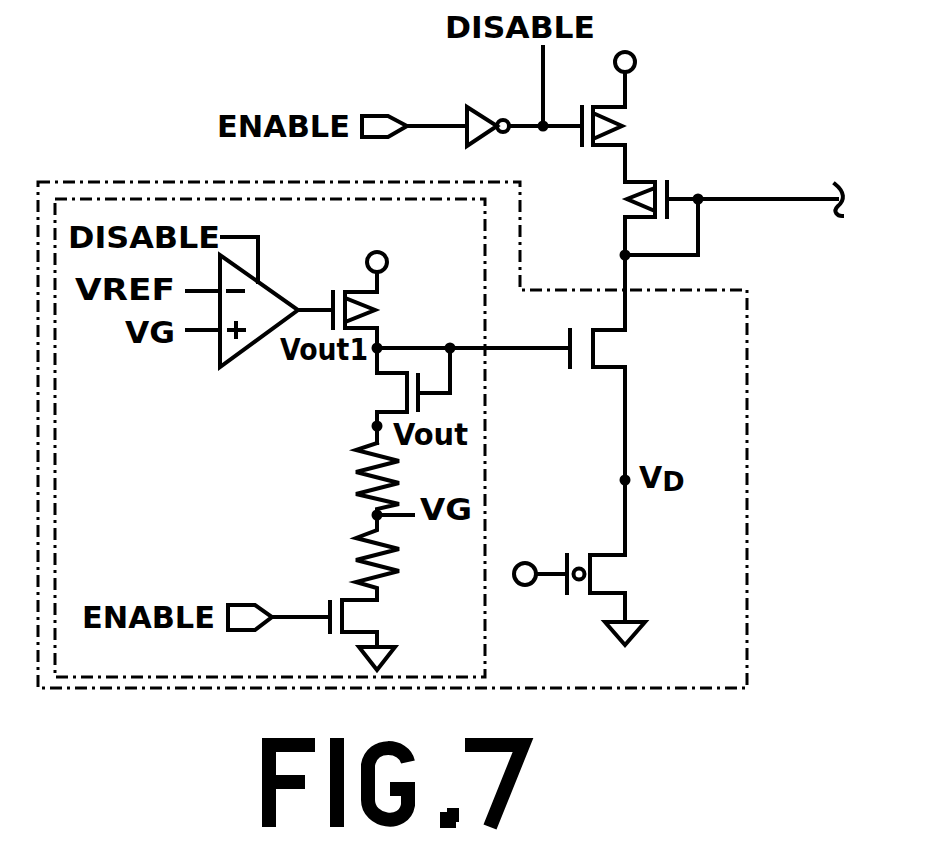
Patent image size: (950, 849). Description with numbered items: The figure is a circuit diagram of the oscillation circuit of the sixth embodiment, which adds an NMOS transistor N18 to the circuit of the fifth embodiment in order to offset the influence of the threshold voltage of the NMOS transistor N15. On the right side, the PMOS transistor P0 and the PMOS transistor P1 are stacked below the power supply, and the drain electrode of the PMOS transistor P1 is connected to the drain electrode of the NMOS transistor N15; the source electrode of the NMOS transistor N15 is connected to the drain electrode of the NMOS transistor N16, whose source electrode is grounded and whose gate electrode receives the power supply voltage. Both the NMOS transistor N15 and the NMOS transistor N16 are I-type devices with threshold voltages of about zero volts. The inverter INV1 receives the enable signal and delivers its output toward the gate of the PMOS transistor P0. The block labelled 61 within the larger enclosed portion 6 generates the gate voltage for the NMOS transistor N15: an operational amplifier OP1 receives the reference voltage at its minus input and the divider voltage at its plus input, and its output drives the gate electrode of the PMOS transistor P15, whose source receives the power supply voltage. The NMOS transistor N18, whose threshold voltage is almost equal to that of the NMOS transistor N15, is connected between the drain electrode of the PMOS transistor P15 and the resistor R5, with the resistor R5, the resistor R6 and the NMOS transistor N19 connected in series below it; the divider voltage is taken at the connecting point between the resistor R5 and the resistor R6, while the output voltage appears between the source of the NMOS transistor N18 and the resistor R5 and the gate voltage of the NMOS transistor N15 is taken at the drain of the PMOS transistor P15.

The inverter INV1 is at (470, 112).
The P-channel MOS transistor P0 is at (632, 127).
The PMOS transistor P1 is at (616, 200).
The PMOS transistor P15 is at (383, 310).
The operational amplifier OP1 is at (221, 355).
The NMOS transistor N18 is at (390, 395).
The resistor R5 is at (349, 460).
The resistor R6 is at (345, 557).
The NMOS transistor N19 is at (365, 617).
The NMOS transistor N15 is at (615, 350).
The NMOS transistor N16 is at (610, 575).
The reference voltage generating circuit 61 is at (487, 432).
The current supply circuit 6 is at (747, 540).